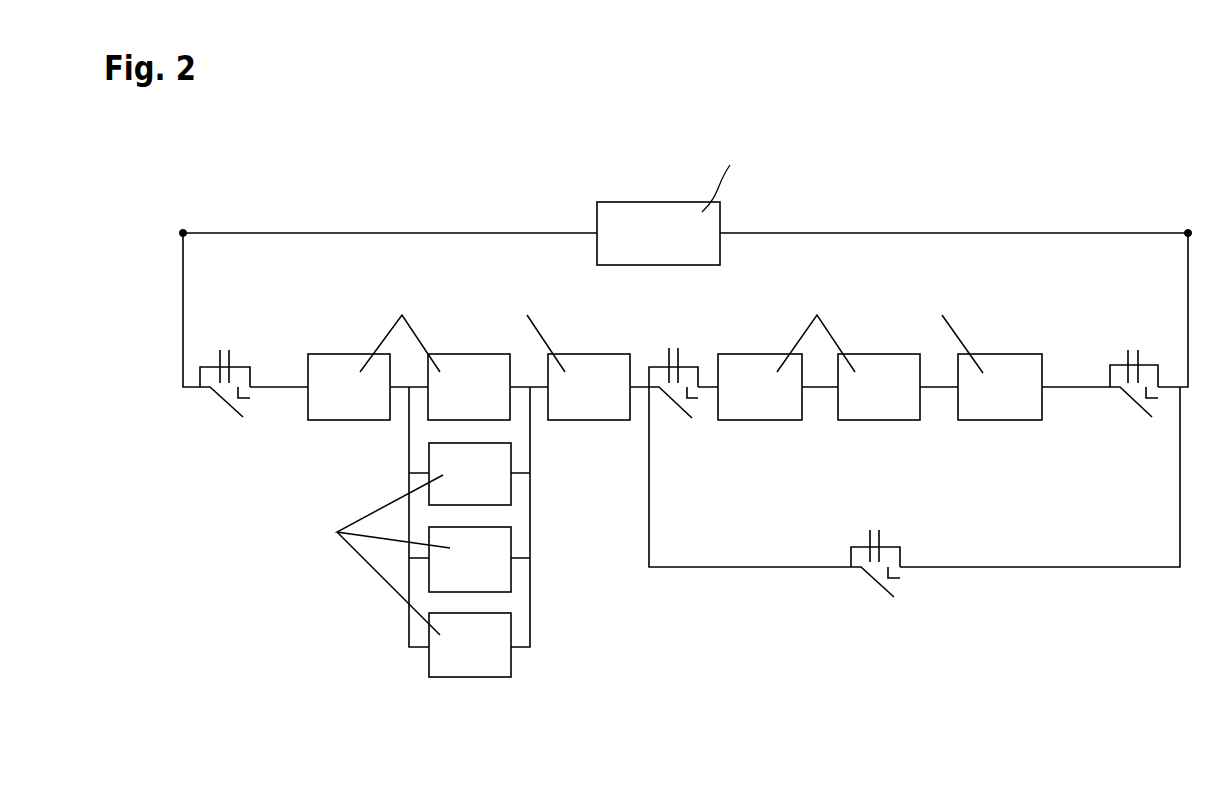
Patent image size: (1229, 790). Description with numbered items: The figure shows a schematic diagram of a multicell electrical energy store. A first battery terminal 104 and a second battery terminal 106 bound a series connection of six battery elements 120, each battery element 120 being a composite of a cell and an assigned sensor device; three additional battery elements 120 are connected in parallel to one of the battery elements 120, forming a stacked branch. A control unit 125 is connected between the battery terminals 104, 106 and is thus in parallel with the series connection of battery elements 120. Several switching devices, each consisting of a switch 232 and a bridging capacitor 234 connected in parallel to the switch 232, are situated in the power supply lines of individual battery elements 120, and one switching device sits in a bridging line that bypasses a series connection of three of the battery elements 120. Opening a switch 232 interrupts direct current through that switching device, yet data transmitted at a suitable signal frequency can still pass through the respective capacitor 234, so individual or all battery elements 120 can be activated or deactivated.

The first battery terminal 104 is at (1188, 230).
The second battery terminal 106 is at (183, 230).
The battery element 120 is at (352, 362).
The control unit 125 is at (658, 210).
The switch 232 is at (222, 405).
The bridging capacitor 234 is at (237, 367).